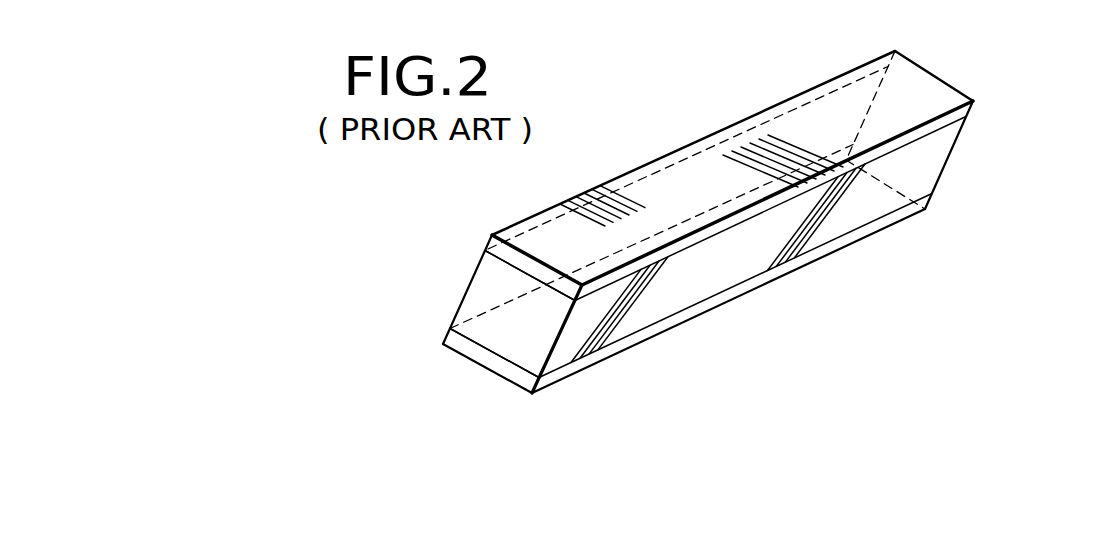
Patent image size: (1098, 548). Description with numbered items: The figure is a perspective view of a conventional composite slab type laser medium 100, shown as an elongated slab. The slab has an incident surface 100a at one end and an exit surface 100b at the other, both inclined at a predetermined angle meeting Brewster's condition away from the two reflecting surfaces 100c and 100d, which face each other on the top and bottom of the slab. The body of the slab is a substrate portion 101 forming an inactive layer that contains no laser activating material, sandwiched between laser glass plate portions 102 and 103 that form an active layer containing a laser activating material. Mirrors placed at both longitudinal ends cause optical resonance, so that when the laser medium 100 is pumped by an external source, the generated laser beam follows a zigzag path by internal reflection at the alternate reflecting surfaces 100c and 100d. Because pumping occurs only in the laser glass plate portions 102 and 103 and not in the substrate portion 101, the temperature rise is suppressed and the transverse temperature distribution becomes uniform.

The conventional composite slab type laser medium 100 is at (903, 243).
The incident surface 100a is at (512, 321).
The exit surface 100b is at (920, 155).
The reflecting surface 100c is at (697, 180).
The reflecting surface 100d is at (713, 268).
The substrate portion 101 is at (832, 222).
The laser glass plate portion 102 is at (847, 155).
The laser glass plate portion 103 is at (633, 337).